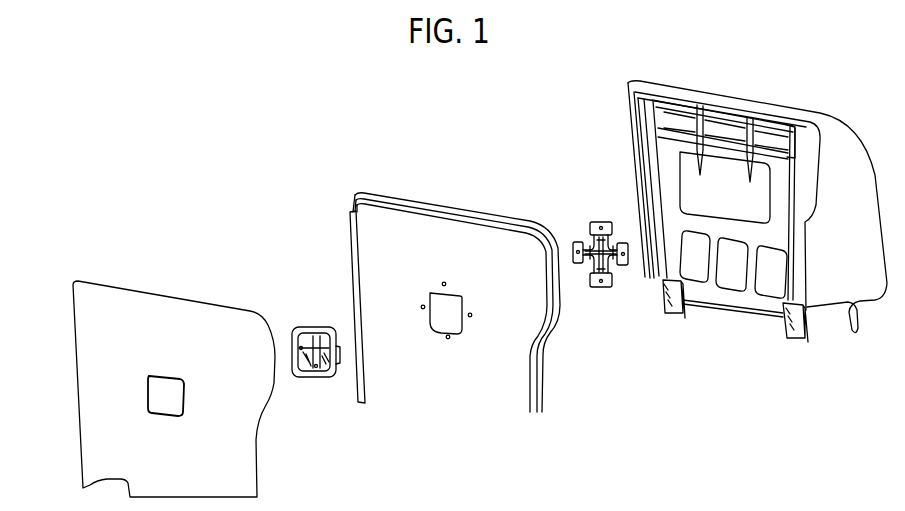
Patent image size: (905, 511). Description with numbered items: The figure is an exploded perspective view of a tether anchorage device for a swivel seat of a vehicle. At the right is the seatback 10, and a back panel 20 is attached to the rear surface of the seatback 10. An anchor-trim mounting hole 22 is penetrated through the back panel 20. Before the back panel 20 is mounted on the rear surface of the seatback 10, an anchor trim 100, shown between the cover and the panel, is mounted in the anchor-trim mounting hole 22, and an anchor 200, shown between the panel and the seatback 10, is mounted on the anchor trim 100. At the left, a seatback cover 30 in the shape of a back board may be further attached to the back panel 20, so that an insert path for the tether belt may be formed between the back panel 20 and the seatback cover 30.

The seatback 10 is at (633, 152).
The back panel 20 is at (542, 383).
The anchor-trim mounting hole 22 is at (453, 313).
The seatback cover 30 is at (90, 399).
The anchor trim 100 is at (308, 322).
The anchor 200 is at (613, 280).